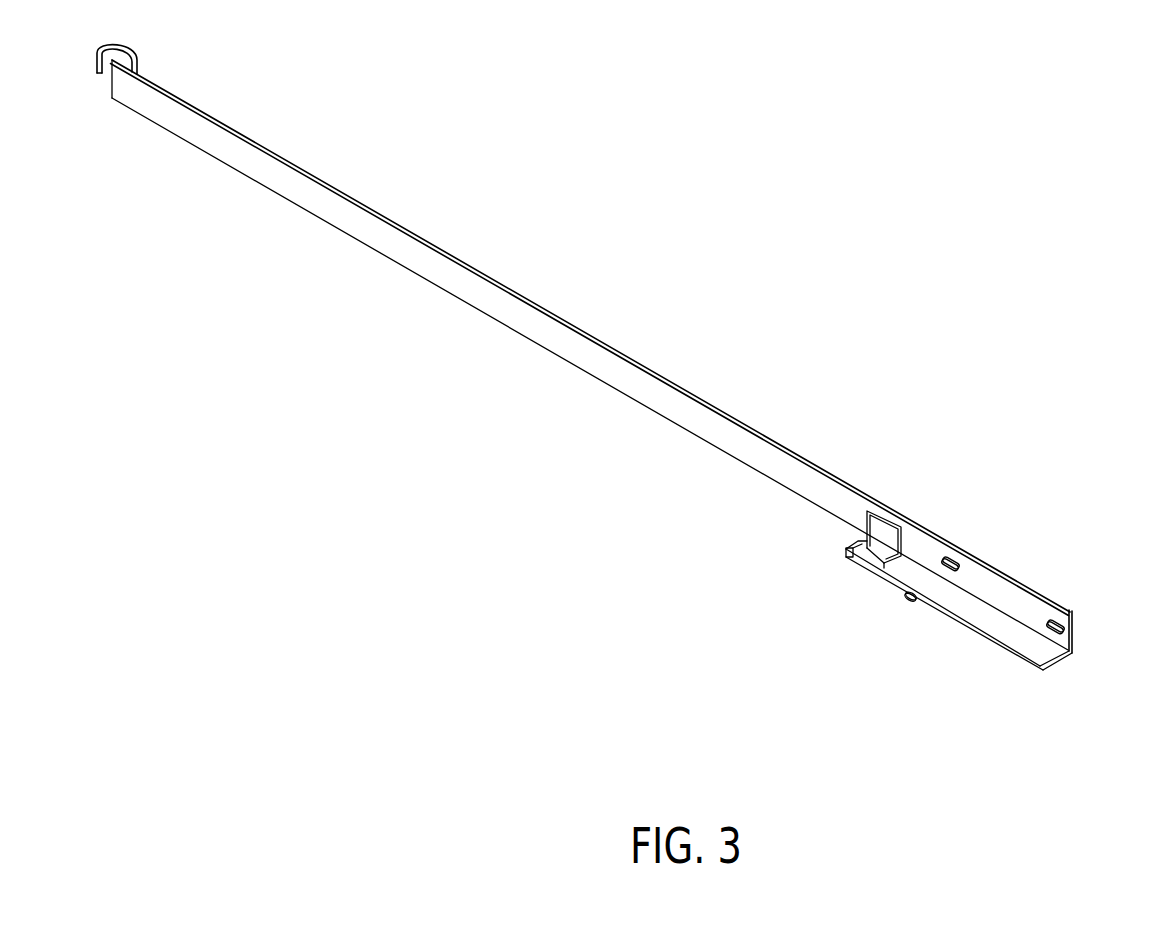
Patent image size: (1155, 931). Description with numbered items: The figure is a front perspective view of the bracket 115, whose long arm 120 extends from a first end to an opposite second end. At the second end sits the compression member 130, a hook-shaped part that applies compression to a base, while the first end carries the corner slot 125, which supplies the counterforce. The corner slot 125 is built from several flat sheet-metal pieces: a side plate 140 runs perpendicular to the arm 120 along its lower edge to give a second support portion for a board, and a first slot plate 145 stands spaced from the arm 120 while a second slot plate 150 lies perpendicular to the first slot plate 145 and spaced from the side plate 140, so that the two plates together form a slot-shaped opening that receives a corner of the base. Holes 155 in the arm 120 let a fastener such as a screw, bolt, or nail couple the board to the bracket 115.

The bracket 115 is at (968, 142).
The arm 120 is at (551, 334).
The corner slot 125 is at (1080, 619).
The compression member 130 is at (140, 66).
The side plate 140 is at (951, 600).
The first slot plate 145 is at (884, 528).
The second slot plate 150 is at (847, 554).
The holes 155 is at (1056, 619).